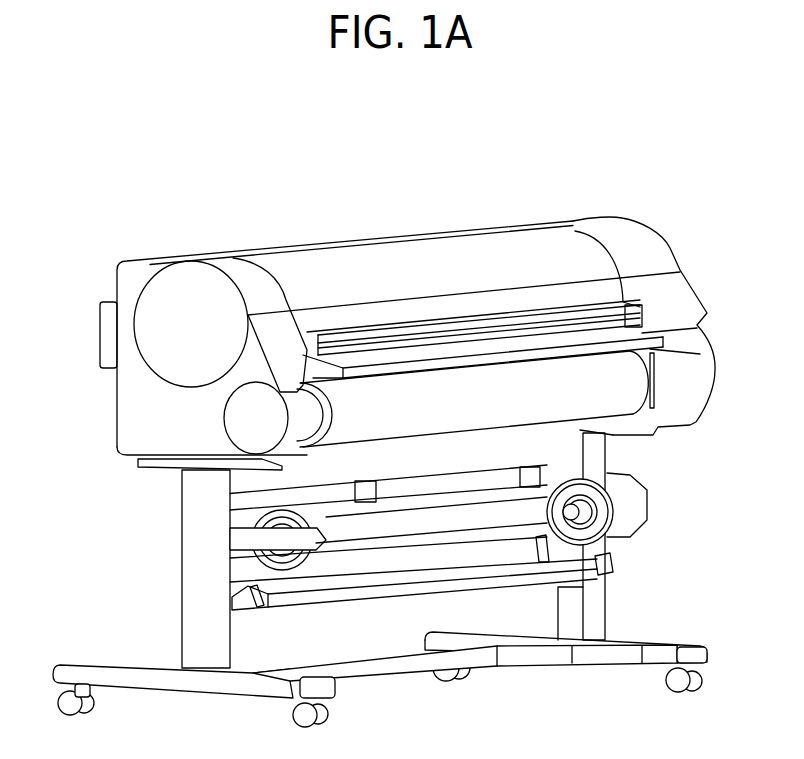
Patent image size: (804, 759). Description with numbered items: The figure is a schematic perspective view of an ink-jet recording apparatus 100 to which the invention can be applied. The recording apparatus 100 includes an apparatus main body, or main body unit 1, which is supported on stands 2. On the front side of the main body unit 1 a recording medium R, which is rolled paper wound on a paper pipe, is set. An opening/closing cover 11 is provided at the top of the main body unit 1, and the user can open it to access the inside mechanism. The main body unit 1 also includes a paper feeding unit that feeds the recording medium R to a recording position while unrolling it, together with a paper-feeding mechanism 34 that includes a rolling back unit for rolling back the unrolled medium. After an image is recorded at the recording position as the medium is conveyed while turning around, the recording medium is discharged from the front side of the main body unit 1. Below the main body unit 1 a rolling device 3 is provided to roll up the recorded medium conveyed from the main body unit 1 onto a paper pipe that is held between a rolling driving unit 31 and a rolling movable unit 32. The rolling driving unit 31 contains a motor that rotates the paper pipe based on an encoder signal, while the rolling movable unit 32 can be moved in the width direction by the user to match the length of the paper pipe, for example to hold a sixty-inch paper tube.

The apparatus main body 1 is at (306, 212).
The opening/closing cover 11 is at (408, 255).
The paper-feeding mechanism 34 is at (698, 383).
The recording medium R is at (537, 417).
The rolling driving unit 31 is at (600, 530).
The rolling movable unit 32 is at (250, 570).
The stands 2 is at (203, 620).
The rolling device 3 is at (357, 552).
The recording apparatus 100 is at (677, 743).